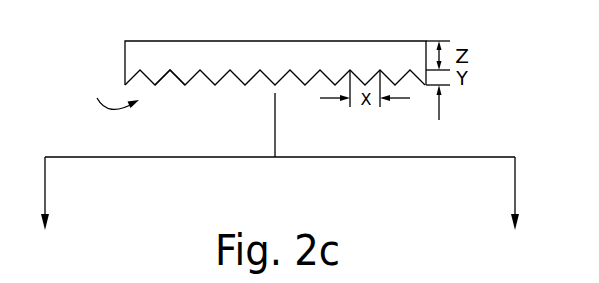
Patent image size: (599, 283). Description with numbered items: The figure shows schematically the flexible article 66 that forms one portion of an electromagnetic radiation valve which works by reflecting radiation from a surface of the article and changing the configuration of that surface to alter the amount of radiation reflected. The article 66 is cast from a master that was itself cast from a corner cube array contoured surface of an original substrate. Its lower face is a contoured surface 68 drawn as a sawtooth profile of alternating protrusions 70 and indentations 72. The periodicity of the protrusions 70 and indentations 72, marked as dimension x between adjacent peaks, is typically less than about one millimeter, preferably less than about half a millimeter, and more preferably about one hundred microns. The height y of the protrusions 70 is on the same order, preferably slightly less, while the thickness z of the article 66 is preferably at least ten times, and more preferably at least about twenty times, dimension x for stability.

The article 66 is at (378, 41).
The contoured surface 68 is at (104, 96).
The protrusions 70 is at (185, 73).
The indentations 72 is at (231, 70).